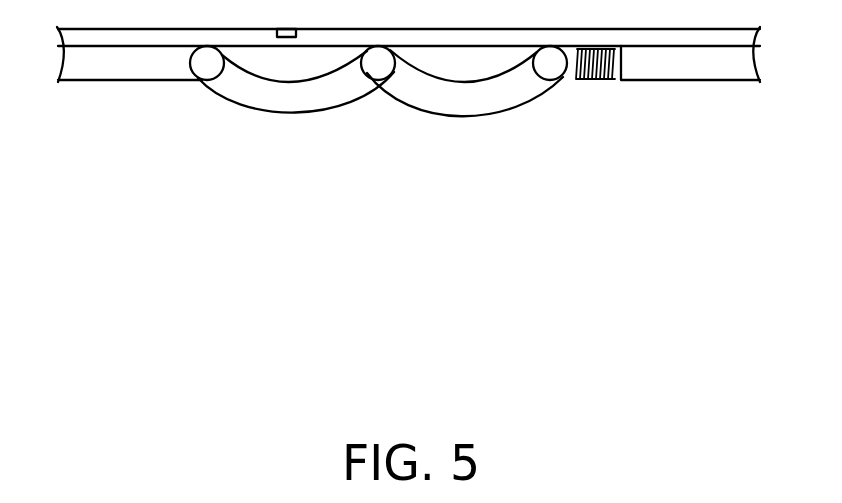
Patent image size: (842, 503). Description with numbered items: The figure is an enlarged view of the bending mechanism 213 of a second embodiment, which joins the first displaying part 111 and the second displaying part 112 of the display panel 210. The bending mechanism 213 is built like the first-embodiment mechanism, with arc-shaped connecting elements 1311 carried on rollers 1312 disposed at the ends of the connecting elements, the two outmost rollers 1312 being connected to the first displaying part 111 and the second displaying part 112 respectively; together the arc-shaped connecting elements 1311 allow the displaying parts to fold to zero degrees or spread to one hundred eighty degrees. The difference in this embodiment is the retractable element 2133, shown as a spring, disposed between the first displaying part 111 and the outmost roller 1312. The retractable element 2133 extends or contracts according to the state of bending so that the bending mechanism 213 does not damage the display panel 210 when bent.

The display panel 210 is at (725, 248).
The bending mechanism 213 is at (402, 155).
The elastic belt 1311 is at (469, 110).
The roller 1312 is at (370, 67).
The retractable element 2133 is at (580, 116).
The first displaying part 111 is at (700, 72).
The second displaying part 112 is at (153, 72).